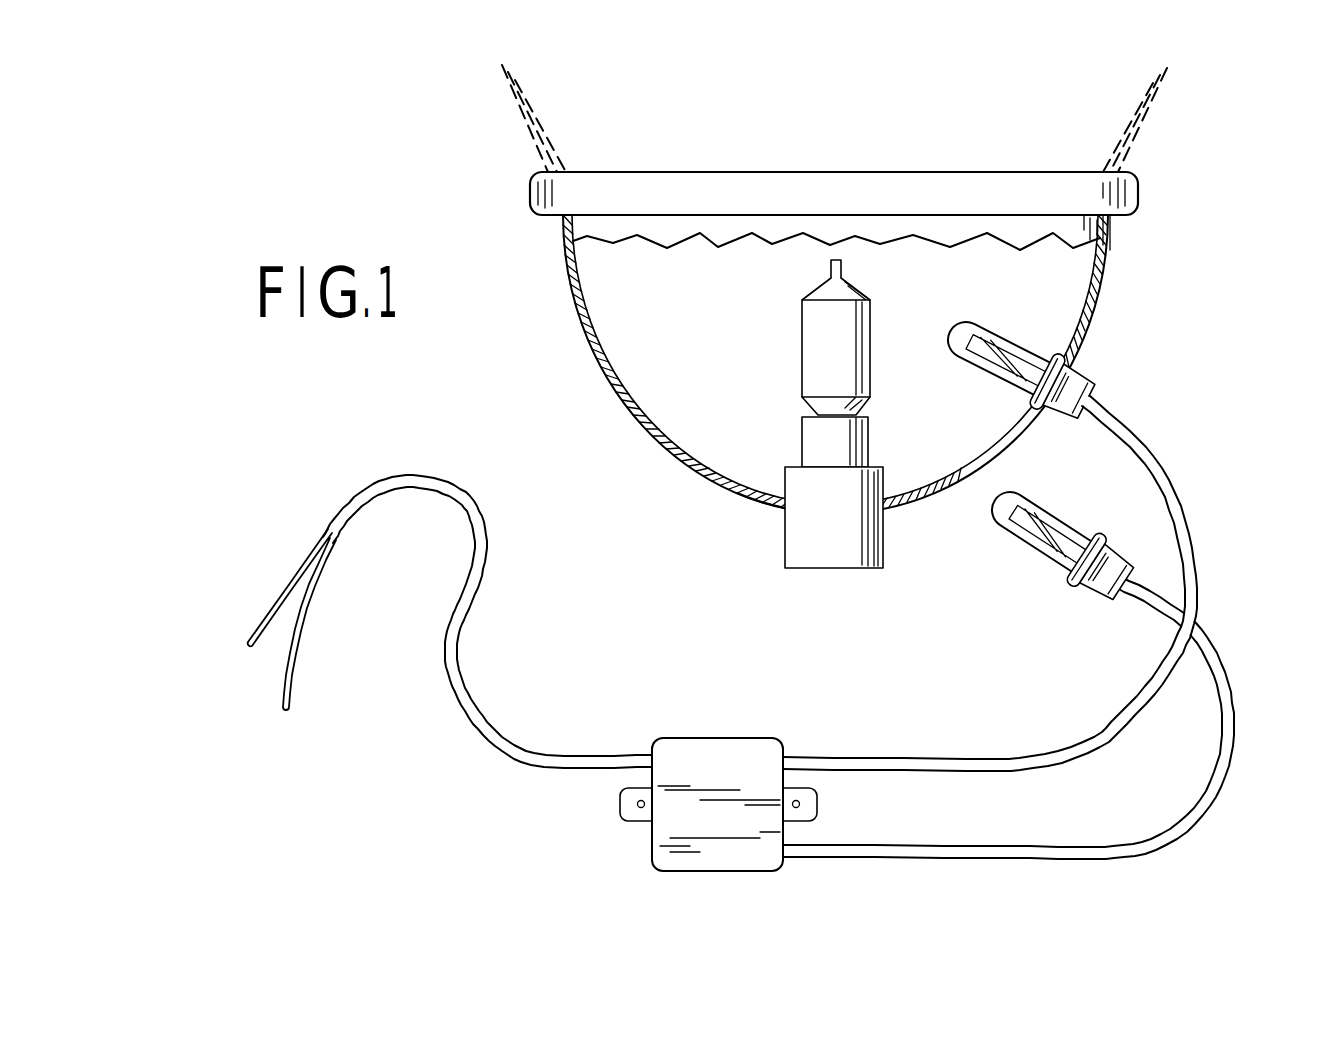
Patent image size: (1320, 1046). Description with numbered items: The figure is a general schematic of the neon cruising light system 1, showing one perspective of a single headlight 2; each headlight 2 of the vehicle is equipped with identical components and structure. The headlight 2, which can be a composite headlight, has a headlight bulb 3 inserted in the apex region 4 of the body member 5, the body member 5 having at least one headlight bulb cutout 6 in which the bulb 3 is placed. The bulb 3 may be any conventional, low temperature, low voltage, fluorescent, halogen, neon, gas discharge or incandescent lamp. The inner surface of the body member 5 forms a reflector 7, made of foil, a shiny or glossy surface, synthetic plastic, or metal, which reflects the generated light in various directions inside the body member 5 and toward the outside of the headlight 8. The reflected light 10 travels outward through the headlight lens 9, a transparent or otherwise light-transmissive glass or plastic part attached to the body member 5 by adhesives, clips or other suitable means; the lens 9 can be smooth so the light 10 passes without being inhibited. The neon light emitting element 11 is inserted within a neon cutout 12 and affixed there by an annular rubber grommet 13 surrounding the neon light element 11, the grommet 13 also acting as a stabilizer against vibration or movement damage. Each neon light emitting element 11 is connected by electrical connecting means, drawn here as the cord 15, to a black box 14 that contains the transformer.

The neon cruising light system 1 is at (741, 489).
The headlight 2 is at (834, 309).
The headlight bulb 3 is at (810, 351).
The apex region 4 is at (838, 568).
The body member 5 is at (633, 425).
The headlight bulb cutout 6 is at (784, 510).
The reflector 7 is at (590, 311).
The outside of the headlight 8 is at (892, 82).
The headlight lens 9 is at (1125, 191).
The reflected light 10 is at (560, 141).
The neon light emitting element 11 is at (1001, 321).
The neon cutout 12 is at (1052, 400).
The annular rubber grommet 13 is at (1075, 376).
The black box 14 is at (722, 853).
The electrical cord 15 is at (972, 847).